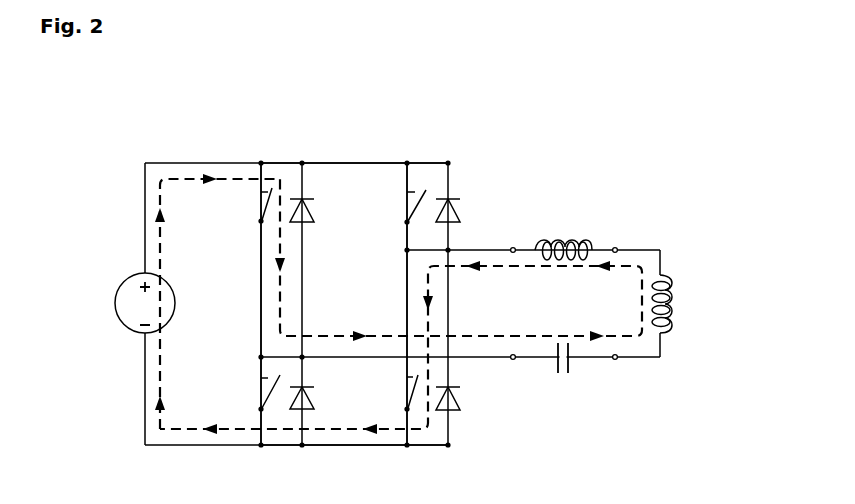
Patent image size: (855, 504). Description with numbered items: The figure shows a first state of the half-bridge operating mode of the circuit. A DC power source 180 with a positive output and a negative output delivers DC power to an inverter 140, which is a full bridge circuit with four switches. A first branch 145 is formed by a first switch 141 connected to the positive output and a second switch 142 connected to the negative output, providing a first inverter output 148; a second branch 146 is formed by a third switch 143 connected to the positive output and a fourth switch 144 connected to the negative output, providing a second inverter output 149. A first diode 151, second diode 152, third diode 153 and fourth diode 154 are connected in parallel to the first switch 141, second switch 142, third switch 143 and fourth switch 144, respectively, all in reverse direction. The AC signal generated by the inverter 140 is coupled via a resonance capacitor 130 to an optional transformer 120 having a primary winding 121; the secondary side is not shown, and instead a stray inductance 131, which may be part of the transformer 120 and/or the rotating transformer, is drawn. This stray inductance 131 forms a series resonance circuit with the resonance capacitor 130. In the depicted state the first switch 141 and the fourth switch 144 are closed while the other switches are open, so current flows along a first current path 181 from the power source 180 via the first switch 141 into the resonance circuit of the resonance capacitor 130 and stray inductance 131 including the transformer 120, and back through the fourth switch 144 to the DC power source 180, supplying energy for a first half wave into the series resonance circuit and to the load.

The transformer 120 is at (614, 272).
The primary winding 121 is at (652, 299).
The resonance capacitor 130 is at (554, 343).
The stray inductance 131 is at (561, 240).
The inverter 140 is at (466, 134).
The first switch 141 is at (260, 208).
The second switch 142 is at (268, 391).
The third switch 143 is at (413, 207).
The fourth switch 144 is at (409, 390).
The first branch 145 is at (282, 138).
The second branch 146 is at (423, 138).
The first inverter output 148 is at (484, 356).
The second inverter output 149 is at (483, 253).
The first diode 151 is at (308, 209).
The second diode 152 is at (308, 394).
The third diode 153 is at (455, 209).
The fourth diode 154 is at (455, 396).
The DC power source 180 is at (141, 276).
The first current path 181 is at (328, 335).